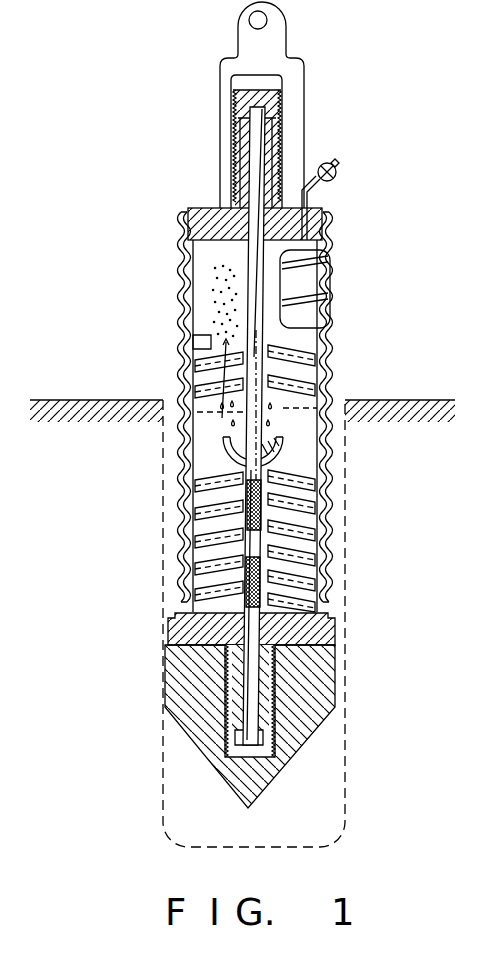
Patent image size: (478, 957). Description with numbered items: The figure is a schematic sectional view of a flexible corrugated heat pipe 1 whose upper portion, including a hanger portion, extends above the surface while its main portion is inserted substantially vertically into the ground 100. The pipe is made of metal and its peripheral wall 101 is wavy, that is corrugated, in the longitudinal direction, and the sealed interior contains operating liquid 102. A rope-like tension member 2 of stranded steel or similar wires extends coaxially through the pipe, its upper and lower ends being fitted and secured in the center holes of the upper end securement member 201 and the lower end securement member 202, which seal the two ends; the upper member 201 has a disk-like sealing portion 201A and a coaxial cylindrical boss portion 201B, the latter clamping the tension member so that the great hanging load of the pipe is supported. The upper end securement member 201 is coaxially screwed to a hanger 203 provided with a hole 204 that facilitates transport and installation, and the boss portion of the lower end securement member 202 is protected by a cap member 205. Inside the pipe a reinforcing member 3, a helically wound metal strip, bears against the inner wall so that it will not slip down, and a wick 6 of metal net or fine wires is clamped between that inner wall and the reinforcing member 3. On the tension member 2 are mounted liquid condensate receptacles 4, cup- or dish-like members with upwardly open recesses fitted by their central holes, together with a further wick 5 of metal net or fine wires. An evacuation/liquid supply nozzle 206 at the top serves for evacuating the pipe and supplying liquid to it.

The ground 100 is at (88, 553).
The corrugated heat pipe 1 is at (188, 257).
The rope-like tension member 2 is at (262, 272).
The reinforcing member 3 is at (318, 374).
The liquid condensate receptacle 4 is at (283, 447).
The wick 5 is at (258, 511).
The wick 6 is at (328, 477).
The peripheral wall 101 is at (188, 343).
The operating liquid 102 is at (307, 553).
The upper end securement member 201 is at (292, 208).
The top plate 201A is at (193, 229).
The threaded nut 201B is at (240, 177).
The lower end securement member 202 is at (305, 627).
The hanger 203 is at (225, 125).
The hole 204 is at (249, 18).
The cap member 205 is at (303, 733).
The evacuation/liquid supply nozzle 206 is at (338, 164).